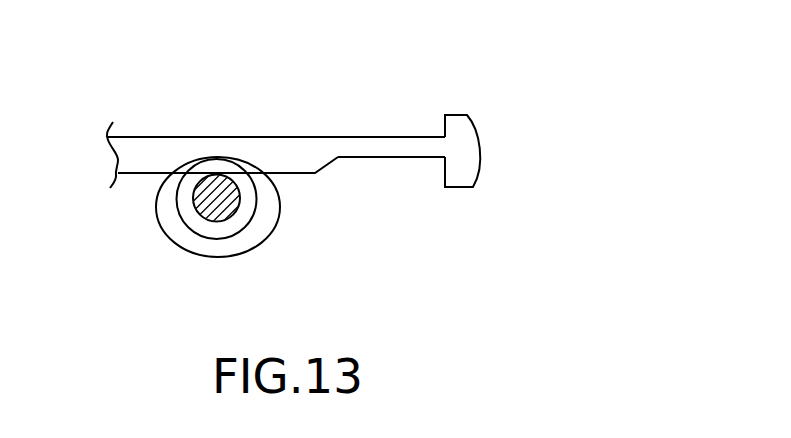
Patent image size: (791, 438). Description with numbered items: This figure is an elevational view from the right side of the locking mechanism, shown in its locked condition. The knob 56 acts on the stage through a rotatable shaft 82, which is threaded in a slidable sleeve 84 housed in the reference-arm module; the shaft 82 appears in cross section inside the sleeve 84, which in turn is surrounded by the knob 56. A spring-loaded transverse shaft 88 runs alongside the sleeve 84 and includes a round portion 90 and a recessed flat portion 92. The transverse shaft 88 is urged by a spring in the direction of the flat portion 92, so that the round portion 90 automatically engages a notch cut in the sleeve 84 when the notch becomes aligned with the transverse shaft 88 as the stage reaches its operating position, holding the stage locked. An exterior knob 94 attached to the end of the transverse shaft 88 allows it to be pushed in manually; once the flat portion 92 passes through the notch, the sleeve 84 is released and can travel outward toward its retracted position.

The transverse shaft 88 is at (139, 130).
The round portion 90 is at (165, 150).
The recessed flat portion 92 is at (385, 148).
The exterior knob 94 is at (472, 150).
The rotatable shaft 82 is at (205, 208).
The slidable sleeve 84 is at (247, 210).
The knob 56 is at (215, 257).